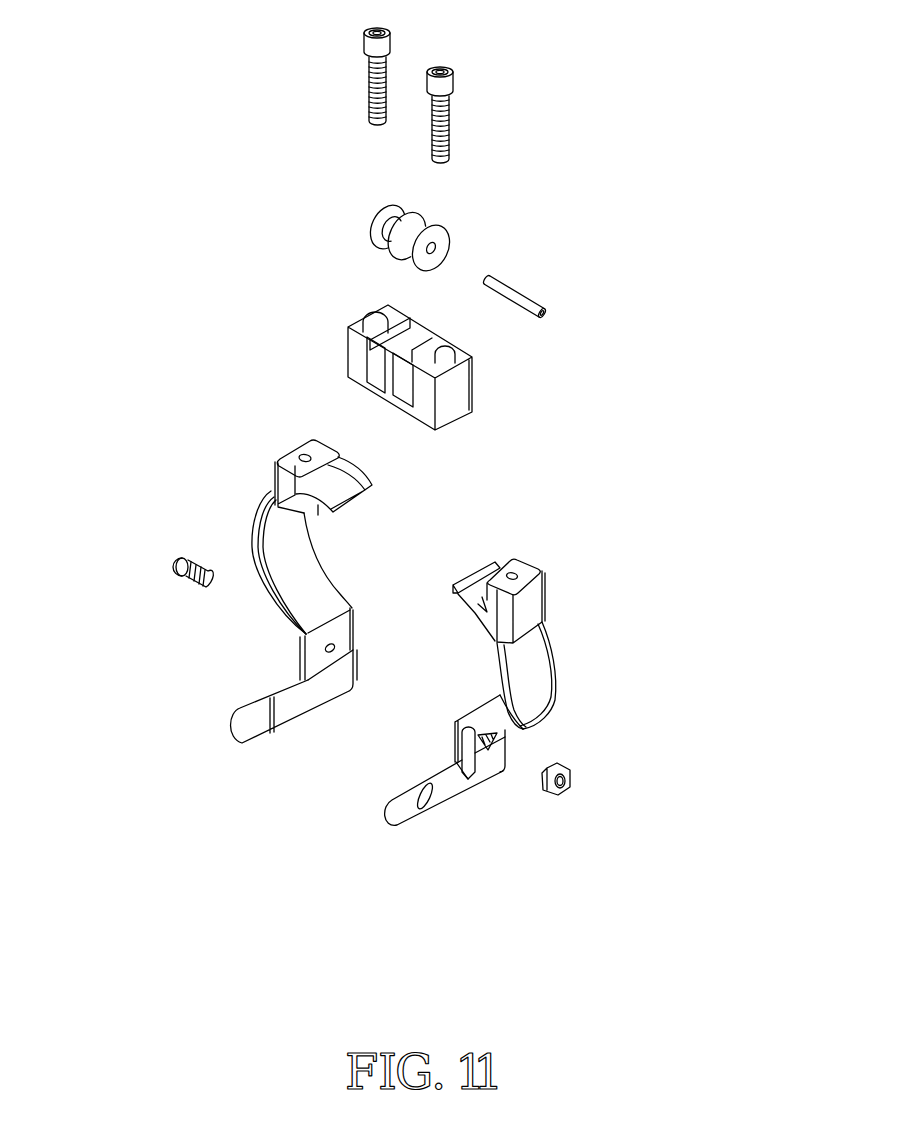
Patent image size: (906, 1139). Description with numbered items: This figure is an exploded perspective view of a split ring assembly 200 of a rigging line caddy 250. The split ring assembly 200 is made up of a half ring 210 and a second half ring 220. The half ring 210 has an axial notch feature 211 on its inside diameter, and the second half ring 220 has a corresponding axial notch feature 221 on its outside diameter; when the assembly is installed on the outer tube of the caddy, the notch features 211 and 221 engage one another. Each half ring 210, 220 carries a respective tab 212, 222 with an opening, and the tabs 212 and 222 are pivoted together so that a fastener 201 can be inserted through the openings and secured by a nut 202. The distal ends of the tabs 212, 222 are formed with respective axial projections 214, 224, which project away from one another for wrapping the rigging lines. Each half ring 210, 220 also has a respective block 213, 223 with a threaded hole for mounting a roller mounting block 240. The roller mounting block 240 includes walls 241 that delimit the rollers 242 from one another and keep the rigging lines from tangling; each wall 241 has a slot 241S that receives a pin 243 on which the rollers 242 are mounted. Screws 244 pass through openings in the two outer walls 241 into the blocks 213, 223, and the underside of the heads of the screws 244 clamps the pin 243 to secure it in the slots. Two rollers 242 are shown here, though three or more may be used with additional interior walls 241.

The split ring assembly 200 is at (556, 580).
The fastener 201 is at (172, 568).
The nut 202 is at (572, 777).
The half ring 210 is at (268, 594).
The axial notch feature 211 is at (320, 512).
The tab 212 is at (352, 626).
The block 213 is at (285, 452).
The axial projection 214 is at (240, 717).
The second half ring 220 is at (553, 676).
The axial notch feature 221 is at (470, 572).
The tab 222 is at (455, 722).
The block 223 is at (533, 565).
The axial projection 224 is at (416, 818).
The roller mounting block 240 is at (474, 402).
The walls 241 is at (440, 328).
The slot 241S is at (406, 356).
The rollers 242 is at (452, 242).
The pin 243 is at (530, 298).
The screws 244 is at (392, 46).
The rigging line caddy 250 is at (632, 321).